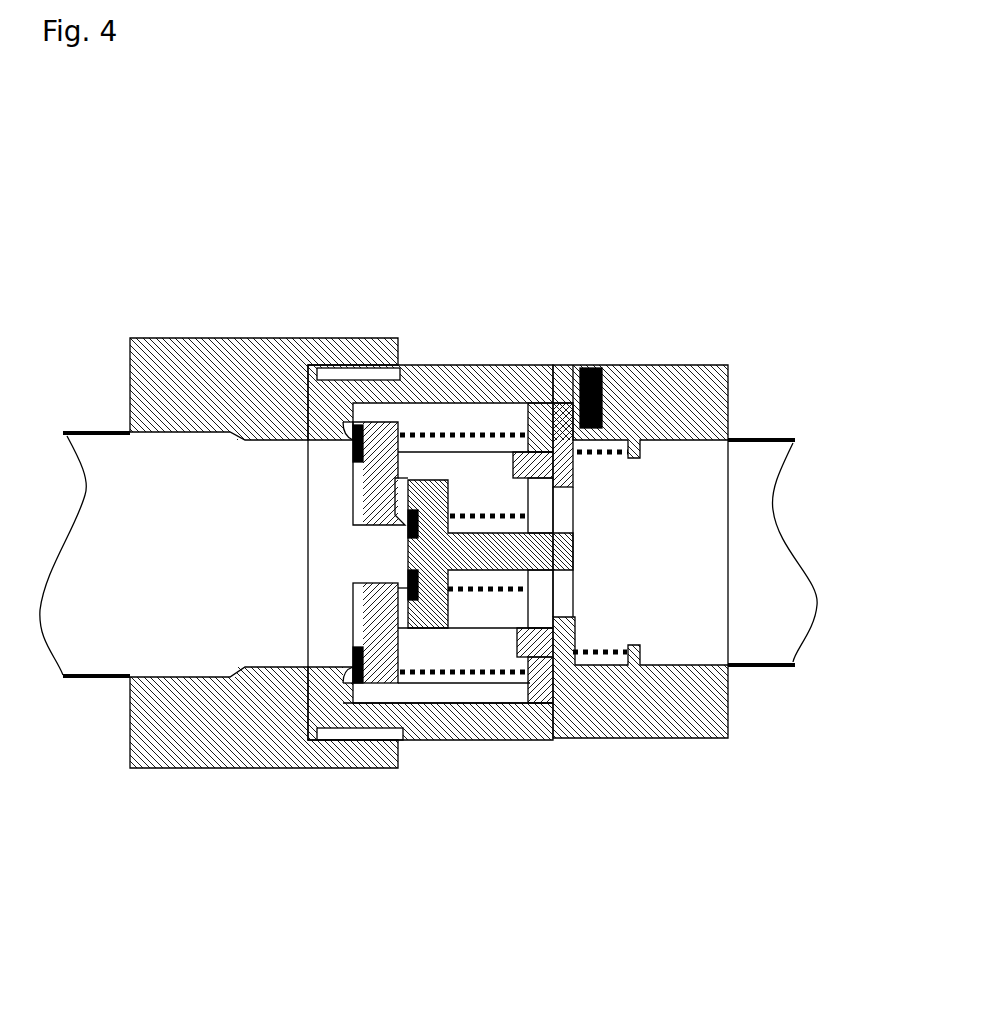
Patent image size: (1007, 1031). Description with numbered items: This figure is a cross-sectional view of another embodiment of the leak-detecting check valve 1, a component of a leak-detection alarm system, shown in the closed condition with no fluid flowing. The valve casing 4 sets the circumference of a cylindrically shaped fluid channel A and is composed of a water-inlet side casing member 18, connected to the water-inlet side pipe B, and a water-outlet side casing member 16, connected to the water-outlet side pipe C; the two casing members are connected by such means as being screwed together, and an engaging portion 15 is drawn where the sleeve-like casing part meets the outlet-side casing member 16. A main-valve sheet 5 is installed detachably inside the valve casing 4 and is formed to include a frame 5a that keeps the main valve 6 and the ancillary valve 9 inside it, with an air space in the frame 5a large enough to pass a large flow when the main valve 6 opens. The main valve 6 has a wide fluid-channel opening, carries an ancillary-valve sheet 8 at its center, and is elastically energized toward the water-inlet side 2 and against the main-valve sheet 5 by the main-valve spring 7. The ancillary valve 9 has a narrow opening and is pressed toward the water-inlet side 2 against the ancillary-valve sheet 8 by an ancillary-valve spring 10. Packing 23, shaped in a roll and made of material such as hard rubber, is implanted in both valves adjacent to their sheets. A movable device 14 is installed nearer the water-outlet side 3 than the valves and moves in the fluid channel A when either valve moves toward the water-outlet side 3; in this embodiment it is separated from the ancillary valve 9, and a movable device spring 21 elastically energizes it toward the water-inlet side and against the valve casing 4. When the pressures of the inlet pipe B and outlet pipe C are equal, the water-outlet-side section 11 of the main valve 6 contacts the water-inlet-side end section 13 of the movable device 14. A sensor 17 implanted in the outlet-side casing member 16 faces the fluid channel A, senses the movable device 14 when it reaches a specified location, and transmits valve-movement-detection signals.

The leak-detecting check valve 1 is at (232, 772).
The water-inlet side 2 is at (243, 602).
The water-outlet side 3 is at (667, 648).
The valve casing 4 is at (413, 720).
The main-valve sheet 5 is at (342, 673).
The frame 5a is at (492, 690).
The main valve 6 is at (410, 645).
The main-valve spring 7 is at (467, 667).
The ancillary-valve sheet 8 is at (392, 517).
The ancillary valve 9 is at (487, 547).
The ancillary-valve spring 10 is at (502, 507).
The water-outlet-side section of the main valve 11 is at (555, 643).
The water-inlet-side end section of the movable device 13 is at (555, 606).
The movable device 14 is at (565, 645).
The engaging tab 15 is at (563, 500).
The water-outlet side casing member 16 is at (568, 382).
The sensor 17 is at (590, 365).
The water-inlet side casing member 18 is at (227, 348).
The movable device spring 21 is at (613, 657).
The packing 23 is at (302, 358).
The fluid channel A is at (537, 517).
The water-inlet side pipe B is at (108, 468).
The water-outlet side pipe C is at (755, 477).